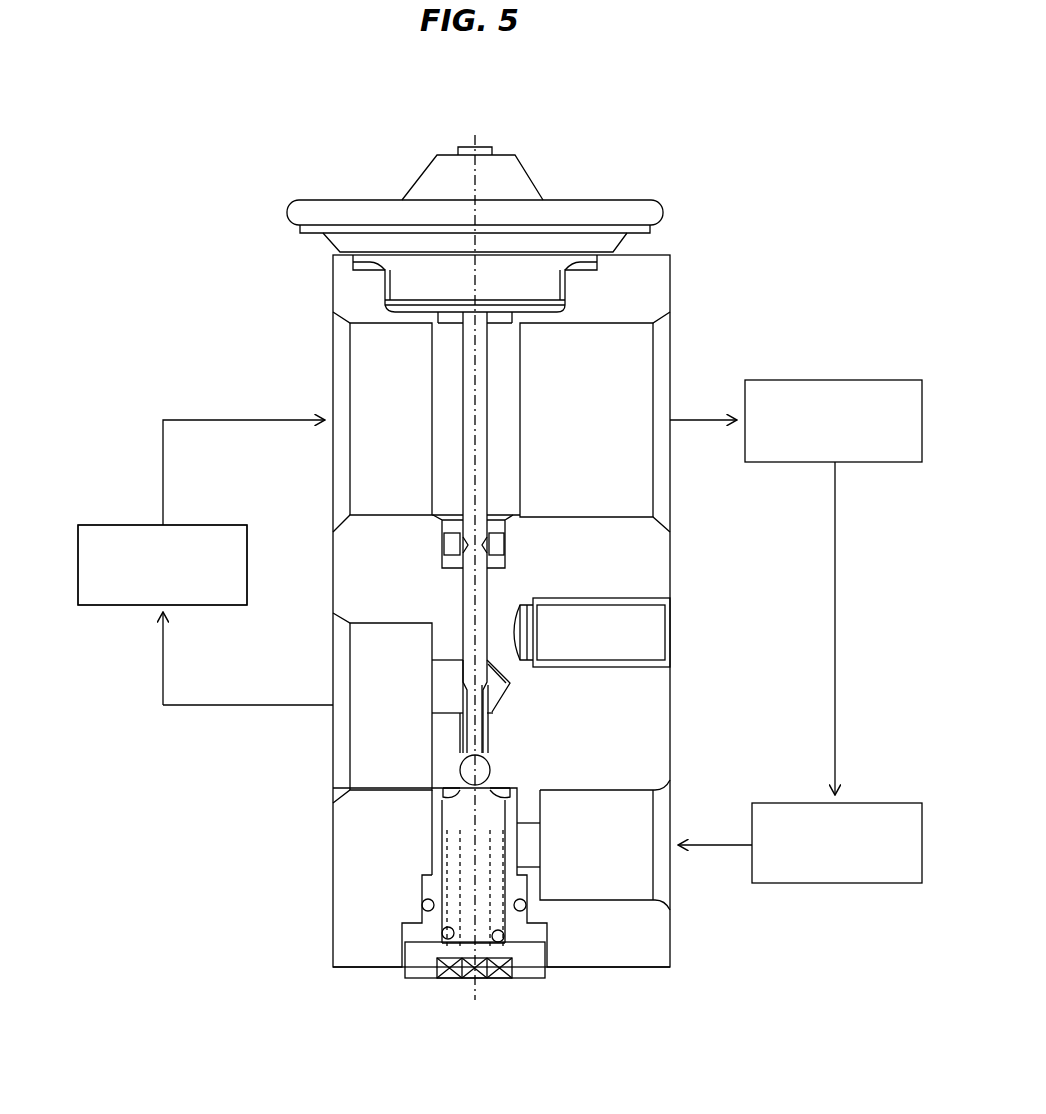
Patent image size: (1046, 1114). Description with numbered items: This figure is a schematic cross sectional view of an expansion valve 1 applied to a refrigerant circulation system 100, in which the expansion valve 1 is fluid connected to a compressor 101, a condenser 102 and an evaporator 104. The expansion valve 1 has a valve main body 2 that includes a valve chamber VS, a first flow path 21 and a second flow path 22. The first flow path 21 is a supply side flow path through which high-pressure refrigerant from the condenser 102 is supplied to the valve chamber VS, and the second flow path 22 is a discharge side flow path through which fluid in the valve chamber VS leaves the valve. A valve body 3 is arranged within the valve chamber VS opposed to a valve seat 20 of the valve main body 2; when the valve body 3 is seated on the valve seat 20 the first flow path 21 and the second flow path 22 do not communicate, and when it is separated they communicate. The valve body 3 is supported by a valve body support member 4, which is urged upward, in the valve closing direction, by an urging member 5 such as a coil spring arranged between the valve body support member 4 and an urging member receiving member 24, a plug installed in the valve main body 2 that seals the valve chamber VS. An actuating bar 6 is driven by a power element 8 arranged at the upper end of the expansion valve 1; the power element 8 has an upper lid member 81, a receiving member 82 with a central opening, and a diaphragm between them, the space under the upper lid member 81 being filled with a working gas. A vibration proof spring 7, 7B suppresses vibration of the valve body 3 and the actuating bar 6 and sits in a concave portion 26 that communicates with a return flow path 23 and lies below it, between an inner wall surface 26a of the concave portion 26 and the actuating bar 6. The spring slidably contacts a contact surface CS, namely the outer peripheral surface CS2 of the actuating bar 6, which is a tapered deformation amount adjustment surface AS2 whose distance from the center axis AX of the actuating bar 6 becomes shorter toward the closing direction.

The expansion valve 1 is at (519, 576).
The valve main body 2 is at (519, 611).
The valve body 3 is at (477, 767).
The valve body support member 4 is at (513, 788).
The urging member 5 is at (501, 920).
The actuating bar 6 is at (480, 352).
The vibration proof spring 7 is at (610, 554).
The seal member 7B is at (610, 554).
The power element 8 is at (458, 216).
The upper lid member 81 is at (372, 213).
The receiving member 82 is at (347, 243).
The valve seat 20 is at (459, 911).
The first flow path 21 is at (637, 882).
The second flow path 22 is at (372, 769).
The return flow path 23 is at (375, 357).
The urging member receiving member 24 is at (501, 920).
The concave portion 26 is at (607, 554).
The inner wall surface 26a is at (607, 554).
The refrigeration cycle 100 is at (245, 179).
The compressor 101 is at (856, 380).
The condenser 102 is at (862, 803).
The evaporator 104 is at (188, 525).
The center axis AX is at (475, 553).
The deformation amount adjustment surface AS2 is at (507, 528).
The contact surface CS is at (463, 538).
The outer peripheral surface CS2 is at (351, 603).
The valve chamber VS is at (472, 923).